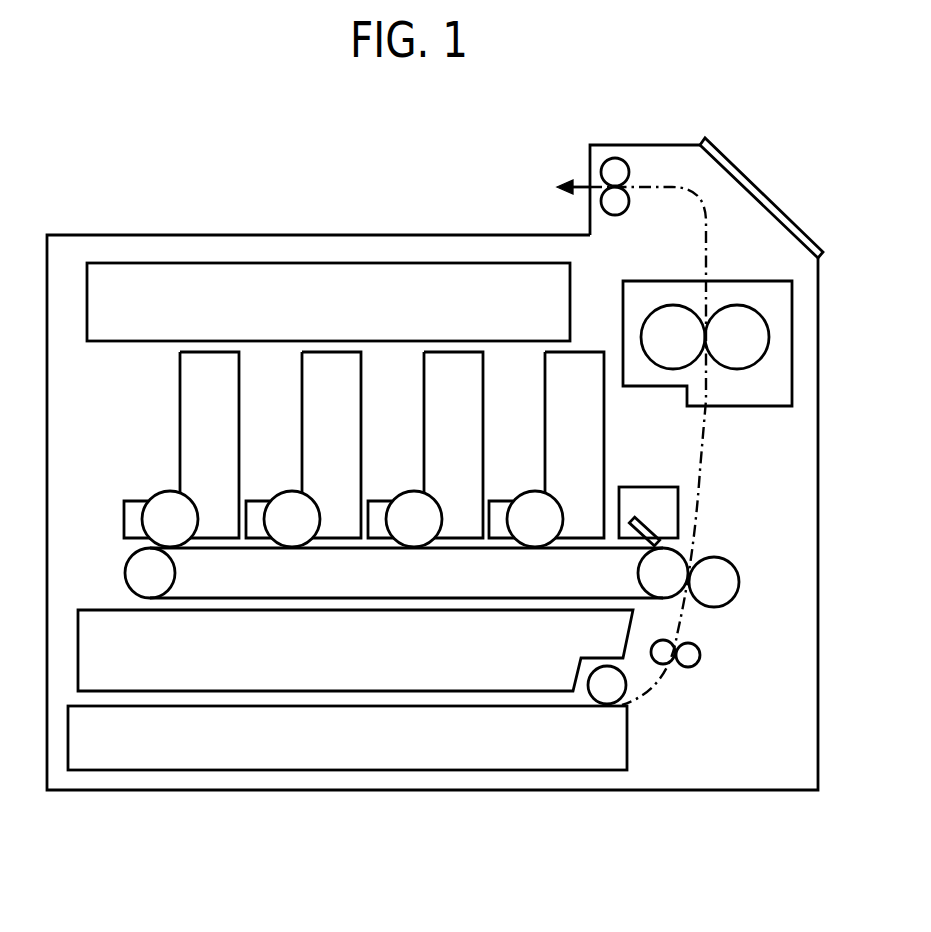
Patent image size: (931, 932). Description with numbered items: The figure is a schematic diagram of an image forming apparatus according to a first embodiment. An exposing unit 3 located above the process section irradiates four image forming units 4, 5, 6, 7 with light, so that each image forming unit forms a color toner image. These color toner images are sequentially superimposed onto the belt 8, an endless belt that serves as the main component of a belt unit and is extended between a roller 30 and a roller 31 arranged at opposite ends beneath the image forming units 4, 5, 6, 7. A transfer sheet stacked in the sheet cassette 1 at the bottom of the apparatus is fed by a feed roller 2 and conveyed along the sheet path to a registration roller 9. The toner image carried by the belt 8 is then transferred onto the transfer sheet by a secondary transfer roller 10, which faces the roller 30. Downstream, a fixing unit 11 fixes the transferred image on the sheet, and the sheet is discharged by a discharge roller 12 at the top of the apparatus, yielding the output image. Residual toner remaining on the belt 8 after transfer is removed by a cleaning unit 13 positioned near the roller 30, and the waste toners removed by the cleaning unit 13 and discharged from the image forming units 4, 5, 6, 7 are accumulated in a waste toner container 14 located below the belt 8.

The sheet cassette 1 is at (368, 762).
The feed roller 2 is at (595, 700).
The exposing unit 3 is at (325, 272).
The image forming unit 4 is at (549, 425).
The image forming unit 5 is at (428, 425).
The image forming unit 6 is at (306, 425).
The image forming unit 7 is at (184, 425).
The belt 8 is at (225, 597).
The registration roller 9 is at (692, 662).
The secondary transfer roller 10 is at (723, 560).
The fixing unit 11 is at (738, 305).
The discharge roller 12 is at (613, 168).
The cleaning unit 13 is at (648, 497).
The waste toner container 14 is at (100, 622).
The roller 30 is at (645, 577).
The roller 31 is at (132, 566).